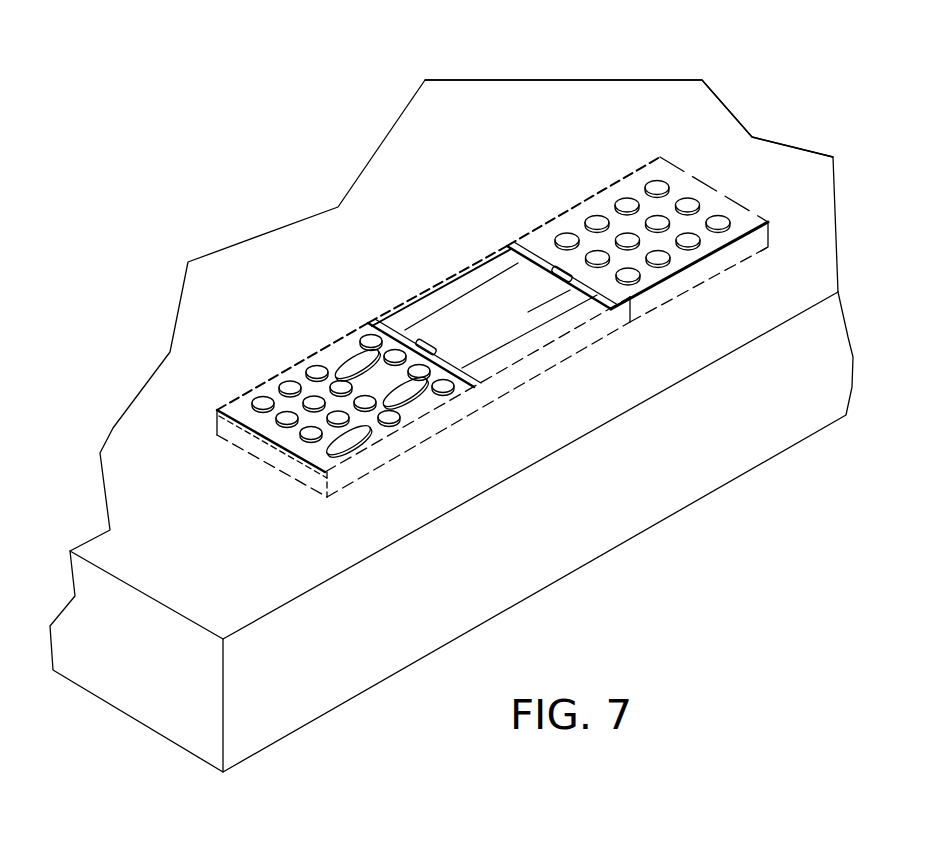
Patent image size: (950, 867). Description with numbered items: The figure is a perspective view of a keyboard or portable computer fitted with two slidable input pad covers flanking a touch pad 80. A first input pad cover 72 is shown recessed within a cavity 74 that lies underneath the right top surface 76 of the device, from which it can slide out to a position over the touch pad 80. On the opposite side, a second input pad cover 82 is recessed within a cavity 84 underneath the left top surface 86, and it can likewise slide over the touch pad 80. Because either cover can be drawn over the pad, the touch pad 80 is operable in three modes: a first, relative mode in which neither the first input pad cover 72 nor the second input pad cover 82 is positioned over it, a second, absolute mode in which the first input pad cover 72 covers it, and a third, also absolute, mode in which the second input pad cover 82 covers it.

The first input pad cover 72 is at (605, 198).
The cavity 74 is at (697, 279).
The right top surface 76 is at (651, 96).
The touch pad 80 is at (442, 296).
The second input pad cover 82 is at (316, 360).
The cavity 84 is at (409, 441).
The left top surface 86 is at (142, 502).